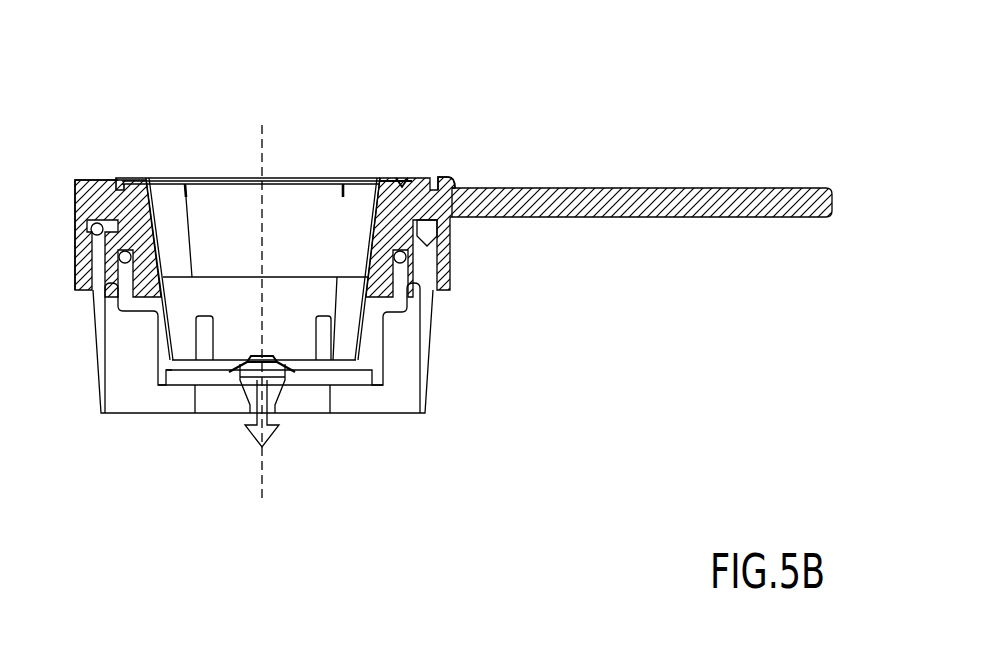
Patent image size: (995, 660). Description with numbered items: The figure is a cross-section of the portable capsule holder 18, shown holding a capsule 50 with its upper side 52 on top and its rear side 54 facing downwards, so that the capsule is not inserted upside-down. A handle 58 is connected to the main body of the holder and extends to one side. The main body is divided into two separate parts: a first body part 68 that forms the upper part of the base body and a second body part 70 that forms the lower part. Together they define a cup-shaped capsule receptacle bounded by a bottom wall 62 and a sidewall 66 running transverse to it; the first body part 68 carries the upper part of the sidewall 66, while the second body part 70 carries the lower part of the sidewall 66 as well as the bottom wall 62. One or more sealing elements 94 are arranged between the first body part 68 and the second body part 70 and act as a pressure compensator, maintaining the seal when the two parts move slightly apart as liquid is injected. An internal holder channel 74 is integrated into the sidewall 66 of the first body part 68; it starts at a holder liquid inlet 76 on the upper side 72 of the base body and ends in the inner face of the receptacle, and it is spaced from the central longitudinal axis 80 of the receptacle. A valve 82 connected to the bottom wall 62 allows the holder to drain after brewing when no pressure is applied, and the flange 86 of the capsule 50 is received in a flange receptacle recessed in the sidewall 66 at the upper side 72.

The portable capsule holder 18 is at (166, 99).
The capsule 50 is at (273, 237).
The upper side 52 is at (230, 173).
The rear side 54 is at (205, 363).
The handle 58 is at (607, 205).
The bottom wall 62 is at (337, 382).
The sidewall 66 is at (138, 237).
The first body part 68 is at (93, 203).
The second body part 70 is at (427, 310).
The upper side 72 is at (92, 177).
The internal holder channel 74 is at (407, 210).
The holder liquid inlet 76 is at (445, 178).
The central longitudinal axis 80 is at (265, 460).
The valve 82 is at (255, 380).
The flange 86 is at (412, 177).
The sealing element 94 is at (98, 238).